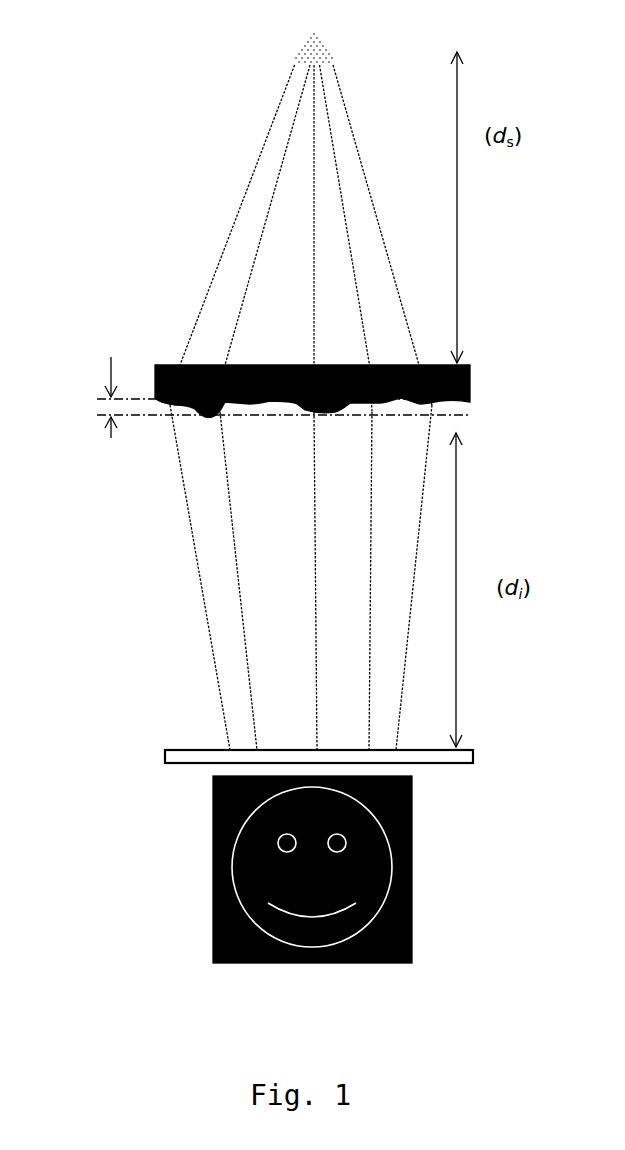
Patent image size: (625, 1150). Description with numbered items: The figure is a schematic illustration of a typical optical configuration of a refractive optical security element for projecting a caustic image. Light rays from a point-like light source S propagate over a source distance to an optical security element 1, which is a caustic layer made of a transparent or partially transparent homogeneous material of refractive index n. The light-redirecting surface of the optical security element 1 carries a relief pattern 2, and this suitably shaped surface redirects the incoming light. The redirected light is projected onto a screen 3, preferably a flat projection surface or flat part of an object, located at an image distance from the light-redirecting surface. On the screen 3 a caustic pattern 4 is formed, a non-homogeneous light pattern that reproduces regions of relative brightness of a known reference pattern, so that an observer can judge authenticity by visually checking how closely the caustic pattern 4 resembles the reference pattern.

The light source S is at (311, 31).
The optical security element 1 is at (312, 374).
The relief pattern 2 is at (266, 397).
The screen 3 is at (319, 737).
The caustic pattern 4 is at (285, 869).